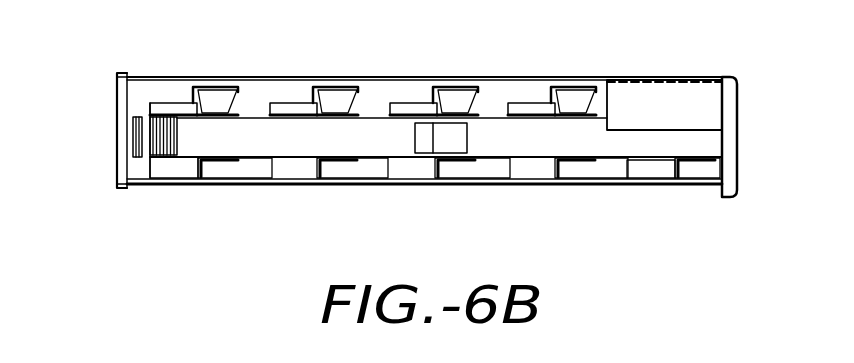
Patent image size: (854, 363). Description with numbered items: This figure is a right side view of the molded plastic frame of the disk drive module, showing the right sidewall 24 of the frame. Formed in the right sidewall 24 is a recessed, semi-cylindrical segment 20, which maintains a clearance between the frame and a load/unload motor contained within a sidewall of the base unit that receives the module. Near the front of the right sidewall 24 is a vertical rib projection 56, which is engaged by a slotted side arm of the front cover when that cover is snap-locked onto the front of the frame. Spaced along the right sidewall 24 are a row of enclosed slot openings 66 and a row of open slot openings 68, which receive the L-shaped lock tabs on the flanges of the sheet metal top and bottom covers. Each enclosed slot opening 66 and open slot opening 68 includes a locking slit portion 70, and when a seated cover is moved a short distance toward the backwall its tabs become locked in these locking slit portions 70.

The recessed semi-cylindrical segment 20 is at (682, 95).
The right sidewall 24 is at (388, 80).
The vertical rib projections 56 is at (137, 124).
The enclosed slot openings 66 is at (178, 105).
The open slot openings 68 is at (178, 173).
The locking slit portions 70 is at (228, 113).